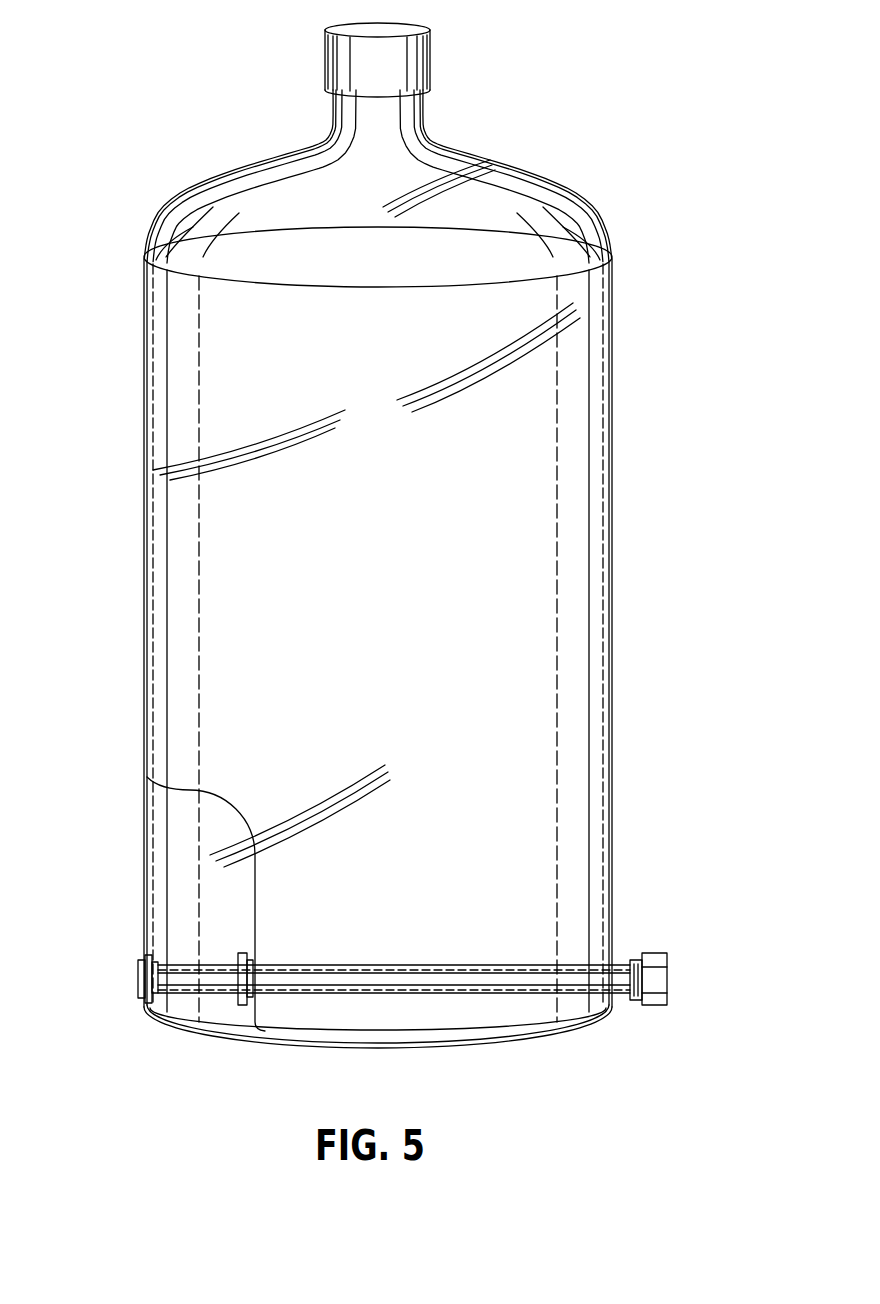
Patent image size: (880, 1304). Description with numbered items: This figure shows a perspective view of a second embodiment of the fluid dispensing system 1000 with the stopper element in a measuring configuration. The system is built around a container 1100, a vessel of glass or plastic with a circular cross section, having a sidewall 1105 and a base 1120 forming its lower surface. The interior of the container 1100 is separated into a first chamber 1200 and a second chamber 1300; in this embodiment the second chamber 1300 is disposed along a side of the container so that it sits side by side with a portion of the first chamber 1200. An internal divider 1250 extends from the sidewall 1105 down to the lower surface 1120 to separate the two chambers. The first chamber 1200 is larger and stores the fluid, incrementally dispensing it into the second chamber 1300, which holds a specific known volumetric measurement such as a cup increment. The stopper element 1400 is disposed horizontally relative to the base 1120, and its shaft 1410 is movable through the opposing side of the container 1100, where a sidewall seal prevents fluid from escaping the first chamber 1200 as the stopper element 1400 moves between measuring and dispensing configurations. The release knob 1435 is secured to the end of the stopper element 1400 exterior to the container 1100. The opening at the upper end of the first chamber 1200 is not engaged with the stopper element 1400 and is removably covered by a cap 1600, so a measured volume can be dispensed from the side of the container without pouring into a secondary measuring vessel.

The fluid dispensing system 1000 is at (499, 128).
The container 1100 is at (612, 266).
The sidewall 1105 is at (143, 518).
The base 1120 is at (287, 1047).
The first chamber 1200 is at (612, 482).
The second chamber 1300 is at (163, 827).
The internal divider 1250 is at (187, 787).
The shaft 1410 is at (453, 997).
The stopper element 1400 is at (657, 1005).
The release knob 1435 is at (668, 975).
The cap 1600 is at (415, 65).